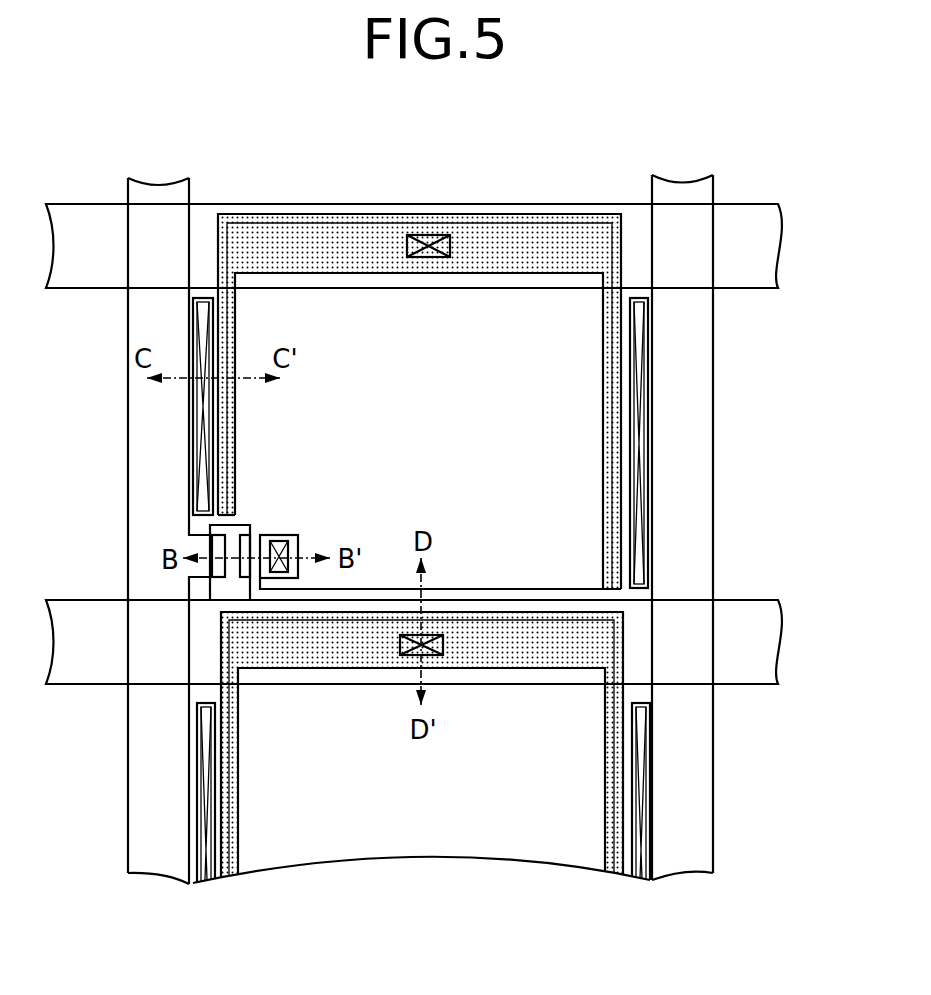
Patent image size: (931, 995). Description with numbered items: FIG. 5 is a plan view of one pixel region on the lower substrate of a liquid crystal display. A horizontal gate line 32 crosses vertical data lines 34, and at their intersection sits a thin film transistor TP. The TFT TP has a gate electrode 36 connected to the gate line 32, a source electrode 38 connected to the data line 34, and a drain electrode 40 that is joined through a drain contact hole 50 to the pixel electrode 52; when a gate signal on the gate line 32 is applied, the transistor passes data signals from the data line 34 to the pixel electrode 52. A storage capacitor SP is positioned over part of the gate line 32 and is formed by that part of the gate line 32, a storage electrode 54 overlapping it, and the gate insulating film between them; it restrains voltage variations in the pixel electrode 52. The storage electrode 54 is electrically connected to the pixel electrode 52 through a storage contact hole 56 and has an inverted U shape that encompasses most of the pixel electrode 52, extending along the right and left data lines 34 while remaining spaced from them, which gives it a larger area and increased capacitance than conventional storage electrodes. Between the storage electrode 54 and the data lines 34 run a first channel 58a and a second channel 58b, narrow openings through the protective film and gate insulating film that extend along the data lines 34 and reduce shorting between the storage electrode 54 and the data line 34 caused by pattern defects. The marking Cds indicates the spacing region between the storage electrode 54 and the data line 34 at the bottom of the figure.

The gate line 32 is at (762, 650).
The data line 34 is at (158, 862).
The gate electrode 36 is at (233, 517).
The source electrode 38 is at (218, 530).
The drain electrode 40 is at (287, 532).
The drain contact hole 50 is at (290, 557).
The pixel electrode 52 is at (430, 858).
The storage electrode 54 is at (470, 213).
The storage contact hole 56 is at (428, 257).
The first channel 58a is at (205, 320).
The second channel 58b is at (645, 412).
The storage capacitor SP is at (492, 293).
The TFT TP is at (176, 536).
The data-to-shield capacitance Cds is at (615, 878).